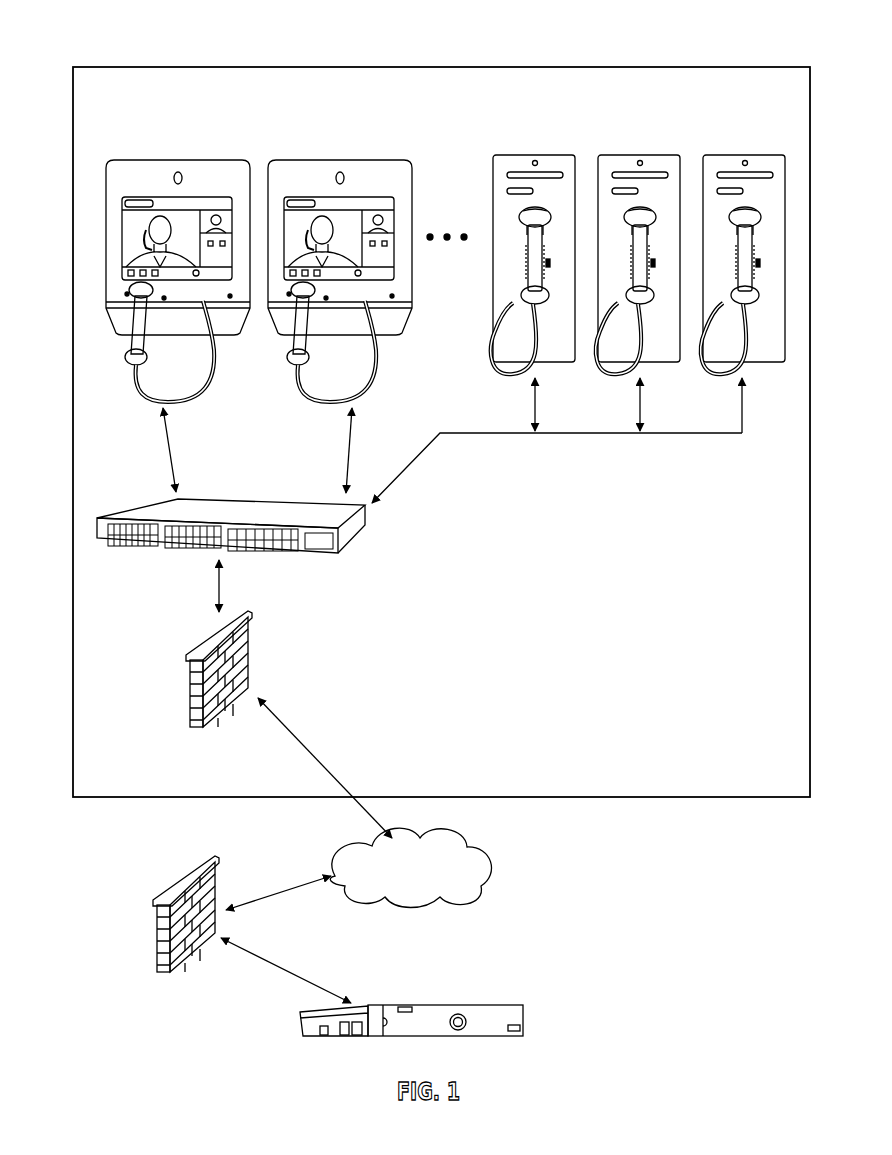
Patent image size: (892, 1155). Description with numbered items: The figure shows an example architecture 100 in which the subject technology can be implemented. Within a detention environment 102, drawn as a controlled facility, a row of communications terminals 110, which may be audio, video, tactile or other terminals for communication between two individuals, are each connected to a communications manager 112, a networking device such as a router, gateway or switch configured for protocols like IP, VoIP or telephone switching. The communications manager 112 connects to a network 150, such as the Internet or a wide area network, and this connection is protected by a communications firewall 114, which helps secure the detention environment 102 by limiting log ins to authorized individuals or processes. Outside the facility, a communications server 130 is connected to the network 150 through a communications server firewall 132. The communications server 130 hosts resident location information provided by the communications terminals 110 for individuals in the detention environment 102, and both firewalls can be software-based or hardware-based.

The architecture 100 is at (146, 32).
The detention environment 102 is at (755, 67).
The communications terminals 110 is at (370, 113).
The communications manager 112 is at (236, 437).
The communications firewall 114 is at (163, 724).
The network 150 is at (443, 840).
The communications server 130 is at (443, 951).
The communications server firewall 132 is at (142, 977).